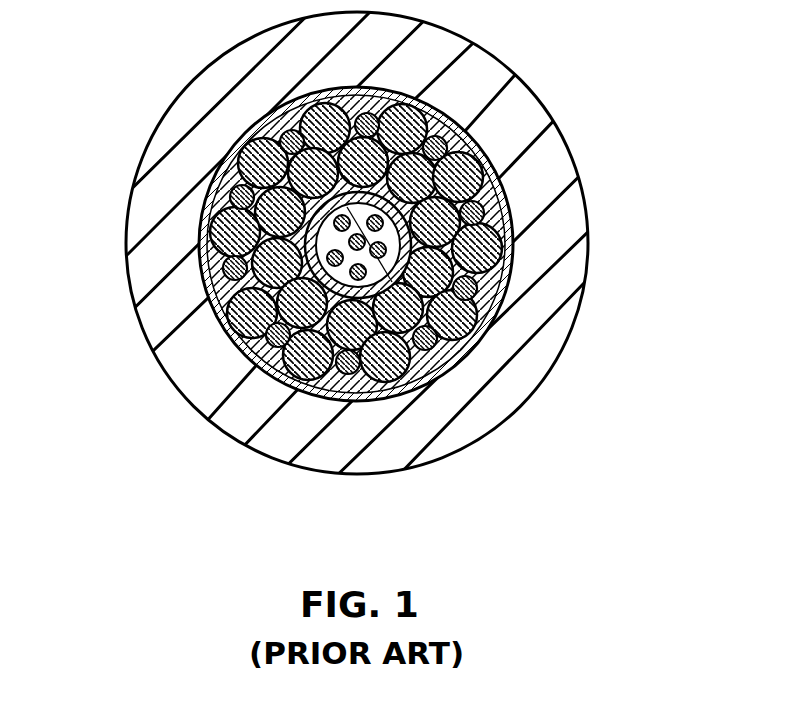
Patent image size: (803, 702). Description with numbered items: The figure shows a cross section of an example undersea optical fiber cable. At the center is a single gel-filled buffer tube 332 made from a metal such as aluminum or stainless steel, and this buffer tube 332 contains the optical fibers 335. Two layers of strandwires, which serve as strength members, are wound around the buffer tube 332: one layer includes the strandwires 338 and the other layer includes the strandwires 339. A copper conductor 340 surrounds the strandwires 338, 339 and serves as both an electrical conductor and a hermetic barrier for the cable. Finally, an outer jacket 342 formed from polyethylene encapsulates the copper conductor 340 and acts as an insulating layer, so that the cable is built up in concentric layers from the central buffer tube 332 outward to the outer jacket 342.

The gel-filled buffer tube 332 is at (305, 244).
The optical fibers 335 is at (393, 243).
The strandwires 338 is at (237, 154).
The strandwires 339 is at (495, 207).
The copper conductor 340 is at (295, 396).
The outer jacket 342 is at (540, 350).